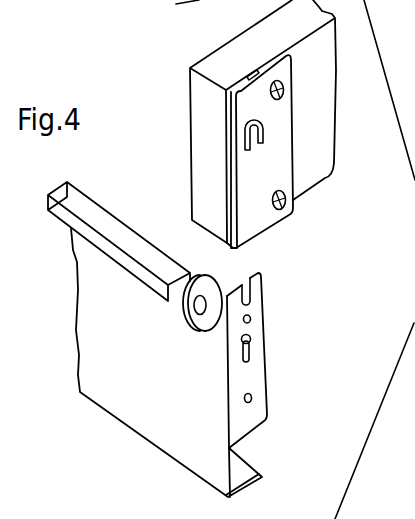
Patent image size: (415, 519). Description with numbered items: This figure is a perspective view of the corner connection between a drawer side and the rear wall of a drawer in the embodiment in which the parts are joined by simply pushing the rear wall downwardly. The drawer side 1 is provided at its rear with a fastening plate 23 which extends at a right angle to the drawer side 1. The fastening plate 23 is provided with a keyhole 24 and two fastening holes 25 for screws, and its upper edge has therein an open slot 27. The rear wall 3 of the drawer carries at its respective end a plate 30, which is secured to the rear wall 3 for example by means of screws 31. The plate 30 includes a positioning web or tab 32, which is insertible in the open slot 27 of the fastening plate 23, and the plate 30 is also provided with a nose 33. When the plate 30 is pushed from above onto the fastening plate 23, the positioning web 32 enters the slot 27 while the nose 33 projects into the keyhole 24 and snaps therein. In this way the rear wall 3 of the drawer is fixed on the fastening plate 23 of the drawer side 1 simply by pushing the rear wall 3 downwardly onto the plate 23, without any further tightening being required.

The drawer side 1 is at (141, 399).
The rear wall 3 is at (311, 142).
The fastening plate 23 is at (258, 380).
The keyhole 24 is at (251, 340).
The fastening holes 25 is at (251, 318).
The open slot 27 is at (252, 290).
The plate 30 is at (270, 172).
The screws 31 is at (284, 94).
The positioning web 32 is at (240, 80).
The nose 33 is at (248, 135).